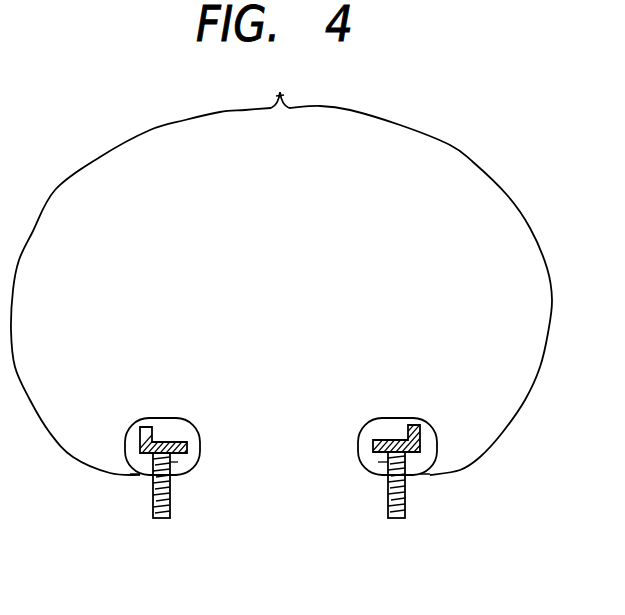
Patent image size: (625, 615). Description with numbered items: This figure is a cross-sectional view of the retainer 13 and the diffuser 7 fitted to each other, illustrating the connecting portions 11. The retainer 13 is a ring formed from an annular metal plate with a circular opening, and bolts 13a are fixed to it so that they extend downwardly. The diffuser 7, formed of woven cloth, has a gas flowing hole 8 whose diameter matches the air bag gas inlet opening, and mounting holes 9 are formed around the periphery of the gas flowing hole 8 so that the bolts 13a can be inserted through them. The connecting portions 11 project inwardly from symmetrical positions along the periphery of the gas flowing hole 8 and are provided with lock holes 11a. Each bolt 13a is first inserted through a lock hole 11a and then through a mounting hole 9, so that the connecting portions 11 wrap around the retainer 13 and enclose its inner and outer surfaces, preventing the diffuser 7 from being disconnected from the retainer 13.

The diffuser 7 is at (477, 161).
The gas flowing hole 8 is at (283, 470).
The mounting holes 9 is at (389, 474).
The connecting portions 11 is at (186, 421).
The lock holes 11a is at (151, 462).
The retainer 13 is at (165, 438).
The bolts 13a is at (158, 521).